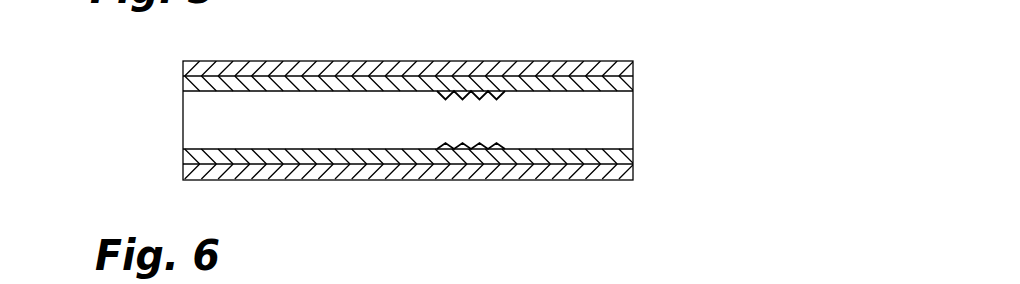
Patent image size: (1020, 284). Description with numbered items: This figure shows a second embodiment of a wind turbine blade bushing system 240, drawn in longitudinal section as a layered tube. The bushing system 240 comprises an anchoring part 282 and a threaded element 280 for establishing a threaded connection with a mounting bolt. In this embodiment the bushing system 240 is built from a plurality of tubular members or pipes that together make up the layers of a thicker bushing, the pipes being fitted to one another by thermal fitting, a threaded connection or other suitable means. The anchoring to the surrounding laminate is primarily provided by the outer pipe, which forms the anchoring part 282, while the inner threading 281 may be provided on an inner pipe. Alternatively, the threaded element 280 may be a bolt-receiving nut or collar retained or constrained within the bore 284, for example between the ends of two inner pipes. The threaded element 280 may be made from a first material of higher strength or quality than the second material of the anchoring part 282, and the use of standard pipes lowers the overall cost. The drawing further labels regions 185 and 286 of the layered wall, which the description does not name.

The wind turbine blade bushing system 240 is at (665, 55).
The anchoring part 282 is at (357, 61).
The bore 284 is at (197, 123).
The interior cavity 185 is at (190, 150).
The lower outer layer 286 is at (633, 143).
The threaded element 280 is at (484, 75).
The inner threading 281 is at (483, 105).